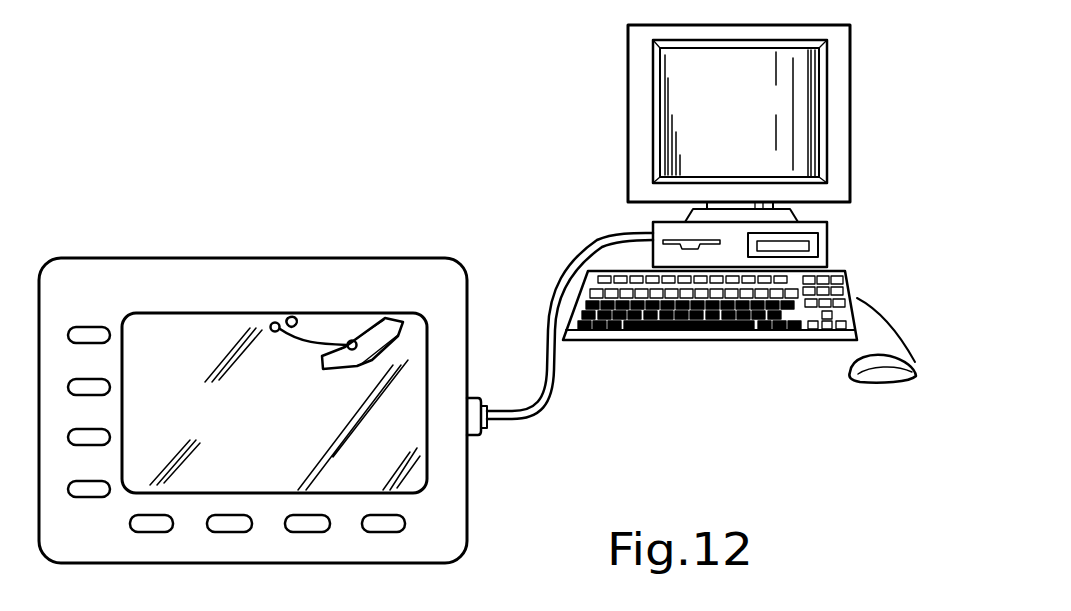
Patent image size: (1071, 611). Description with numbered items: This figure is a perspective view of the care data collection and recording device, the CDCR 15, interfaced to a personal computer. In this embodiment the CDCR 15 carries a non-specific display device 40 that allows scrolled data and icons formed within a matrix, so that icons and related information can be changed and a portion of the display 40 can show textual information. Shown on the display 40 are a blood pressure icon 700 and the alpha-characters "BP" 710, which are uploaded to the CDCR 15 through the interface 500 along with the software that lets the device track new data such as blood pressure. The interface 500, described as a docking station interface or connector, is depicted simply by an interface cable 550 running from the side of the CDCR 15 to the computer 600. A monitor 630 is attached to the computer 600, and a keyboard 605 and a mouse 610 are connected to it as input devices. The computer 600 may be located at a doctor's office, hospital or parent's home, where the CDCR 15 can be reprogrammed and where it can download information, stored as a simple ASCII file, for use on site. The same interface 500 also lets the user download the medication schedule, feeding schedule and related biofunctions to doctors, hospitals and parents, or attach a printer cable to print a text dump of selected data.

The CDCR 15 is at (105, 250).
The display device 40 is at (415, 357).
The alpha-characters "BP" 710 is at (183, 317).
The blood pressure icon 700 is at (330, 335).
The interface 500 is at (477, 398).
The interface cable 550 is at (553, 393).
The computer 600 is at (829, 234).
The monitor 630 is at (628, 78).
The keyboard 605 is at (711, 334).
The mouse 610 is at (850, 378).